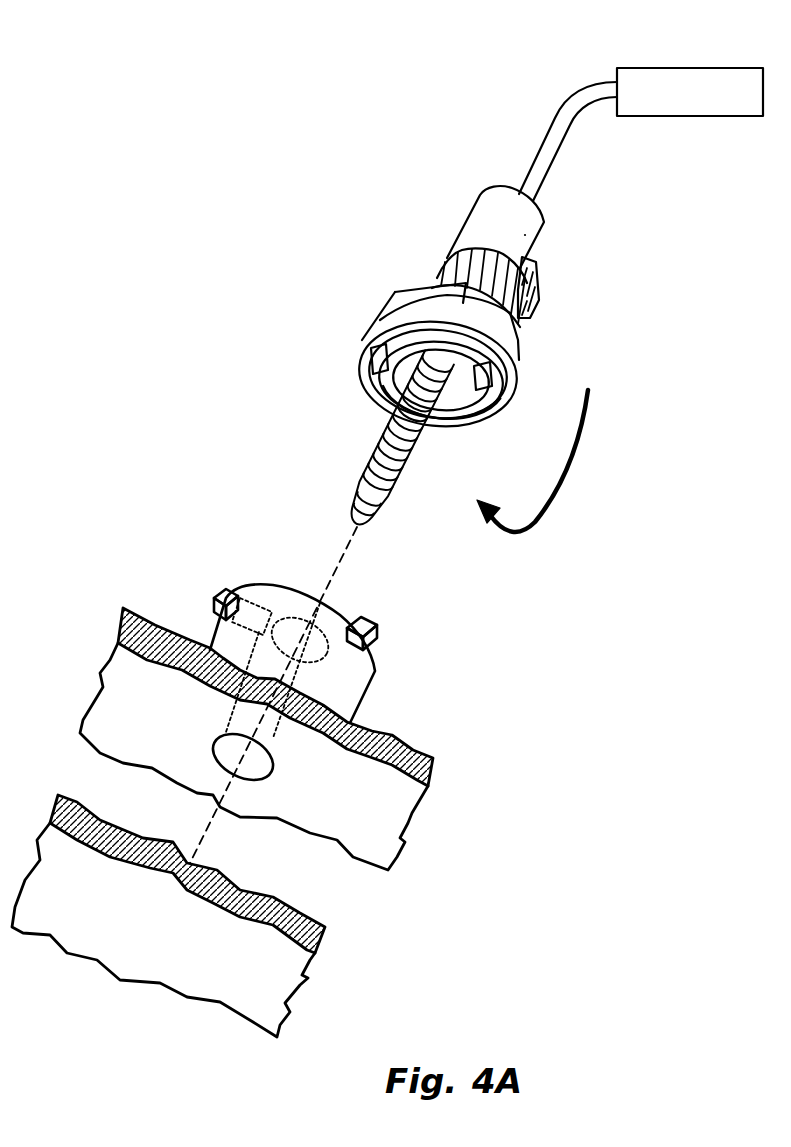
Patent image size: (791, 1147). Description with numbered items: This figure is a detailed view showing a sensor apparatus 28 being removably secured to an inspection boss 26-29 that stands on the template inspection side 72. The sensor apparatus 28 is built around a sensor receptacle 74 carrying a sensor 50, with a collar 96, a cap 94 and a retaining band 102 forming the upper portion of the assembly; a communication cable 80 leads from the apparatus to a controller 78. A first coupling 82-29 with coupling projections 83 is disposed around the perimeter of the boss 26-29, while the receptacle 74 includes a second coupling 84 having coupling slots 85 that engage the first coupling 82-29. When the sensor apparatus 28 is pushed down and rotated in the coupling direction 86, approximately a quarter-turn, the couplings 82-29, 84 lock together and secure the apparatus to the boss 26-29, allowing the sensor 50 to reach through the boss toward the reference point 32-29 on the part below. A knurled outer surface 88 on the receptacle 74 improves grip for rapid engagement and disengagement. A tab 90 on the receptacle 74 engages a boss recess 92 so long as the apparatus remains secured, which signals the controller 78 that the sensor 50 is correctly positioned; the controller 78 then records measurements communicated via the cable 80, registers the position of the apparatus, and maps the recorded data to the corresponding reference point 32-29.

The controller 78 is at (646, 68).
The communication cable 80 is at (568, 108).
The sensor apparatus 28 is at (404, 238).
The collar 96 is at (482, 210).
The sensor receptacle 74 is at (530, 232).
The retaining band 102 is at (542, 292).
The receptacle outer surface 88 is at (392, 316).
The second coupling 84 is at (338, 370).
The cap 94 is at (510, 364).
The coupling slots 85 is at (372, 349).
The tab 90 is at (383, 393).
The sensor 50 is at (407, 447).
The coupling direction 86 is at (583, 423).
The inspection boss 26-29 is at (291, 649).
The boss recess 92 is at (257, 600).
The first coupling 82-29 is at (395, 604).
The coupling projections 83 is at (378, 632).
The template inspection side 72 is at (413, 750).
The reference point 32-29 is at (190, 875).